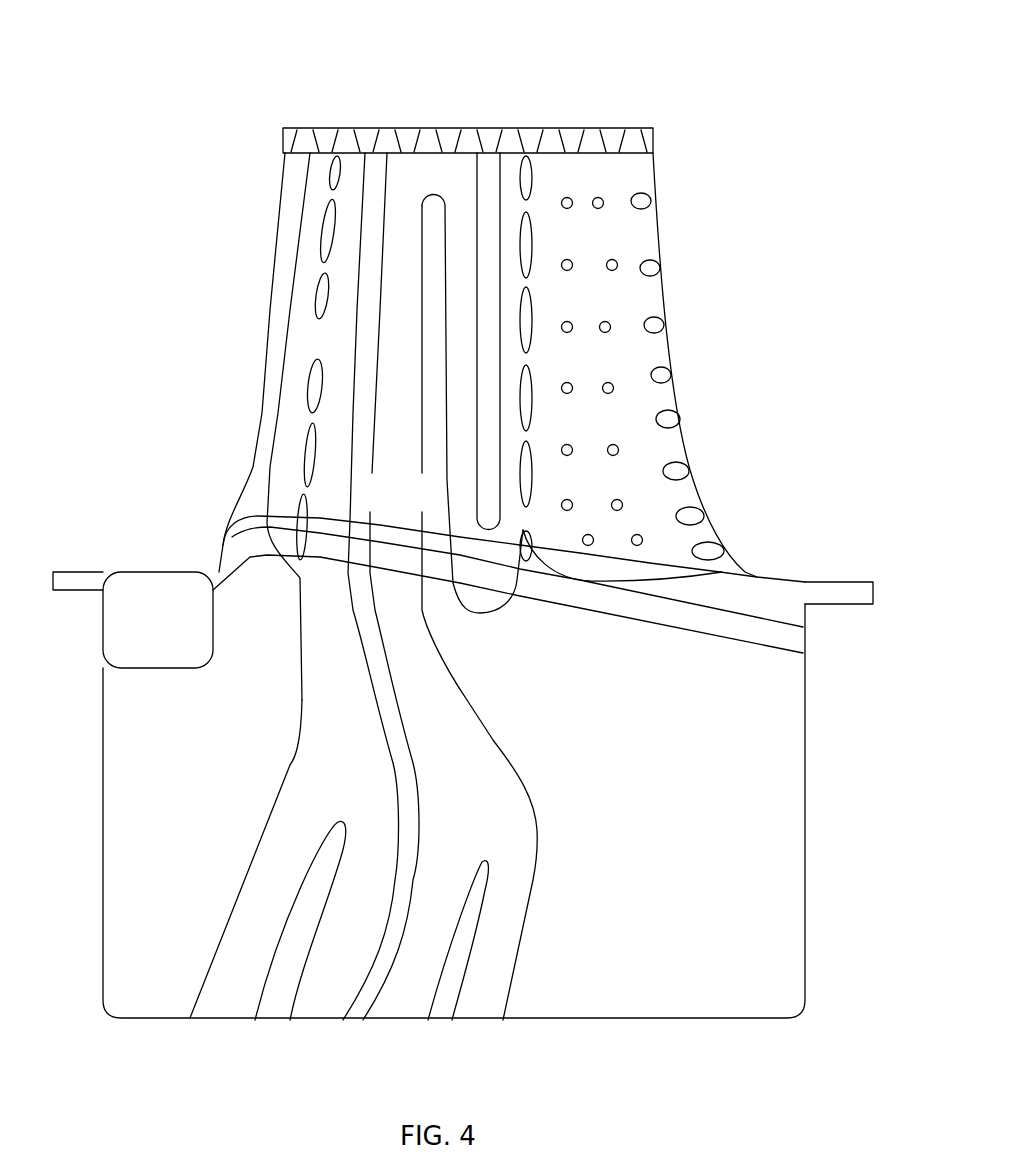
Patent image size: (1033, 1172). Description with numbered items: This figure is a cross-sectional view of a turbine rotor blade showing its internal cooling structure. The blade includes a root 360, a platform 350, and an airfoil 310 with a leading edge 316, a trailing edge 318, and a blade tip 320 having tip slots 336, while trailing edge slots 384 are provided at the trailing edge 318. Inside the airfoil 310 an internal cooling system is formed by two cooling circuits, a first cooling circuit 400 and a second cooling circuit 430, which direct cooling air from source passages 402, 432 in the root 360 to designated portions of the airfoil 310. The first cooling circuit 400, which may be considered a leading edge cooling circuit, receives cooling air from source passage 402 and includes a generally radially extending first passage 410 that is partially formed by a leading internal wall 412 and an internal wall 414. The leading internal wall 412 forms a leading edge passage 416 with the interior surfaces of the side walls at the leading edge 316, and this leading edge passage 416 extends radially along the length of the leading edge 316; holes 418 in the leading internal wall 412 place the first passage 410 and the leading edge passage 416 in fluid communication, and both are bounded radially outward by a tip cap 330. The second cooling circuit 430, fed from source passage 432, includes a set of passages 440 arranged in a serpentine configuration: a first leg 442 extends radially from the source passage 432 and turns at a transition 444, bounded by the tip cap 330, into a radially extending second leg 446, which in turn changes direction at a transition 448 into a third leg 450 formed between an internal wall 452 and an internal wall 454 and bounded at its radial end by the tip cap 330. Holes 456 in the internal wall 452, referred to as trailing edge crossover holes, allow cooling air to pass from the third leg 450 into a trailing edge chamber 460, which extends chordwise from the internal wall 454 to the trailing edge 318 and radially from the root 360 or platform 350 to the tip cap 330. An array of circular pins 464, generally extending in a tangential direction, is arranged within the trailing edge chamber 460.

The airfoil 310 is at (207, 280).
The leading edge 316 is at (283, 180).
The trailing edge 318 is at (655, 180).
The blade tip 320 is at (283, 128).
The tip cap 330 is at (377, 128).
The tip slots 336 is at (337, 128).
The platform 350 is at (103, 572).
The root 360 is at (103, 855).
The trailing edge slots 384 is at (655, 228).
The first cooling circuit 400 is at (298, 261).
The source passage 402 is at (297, 752).
The first passage 410 is at (330, 442).
The leading internal wall 412 is at (325, 250).
The internal wall 414 is at (355, 325).
The leading edge passage 416 is at (288, 370).
The holes 418 is at (317, 418).
The second cooling circuit 430 is at (462, 165).
The source passage 432 is at (497, 742).
The passages 440 is at (399, 412).
The first leg 442 is at (408, 290).
The transition 444 is at (425, 172).
The second leg 446 is at (462, 255).
The transition 448 is at (487, 607).
The third leg 450 is at (528, 286).
The internal wall 452 is at (528, 481).
The internal wall 454 is at (532, 165).
The holes 456 is at (528, 351).
The trailing edge chamber 460 is at (642, 459).
The pins 464 is at (610, 326).